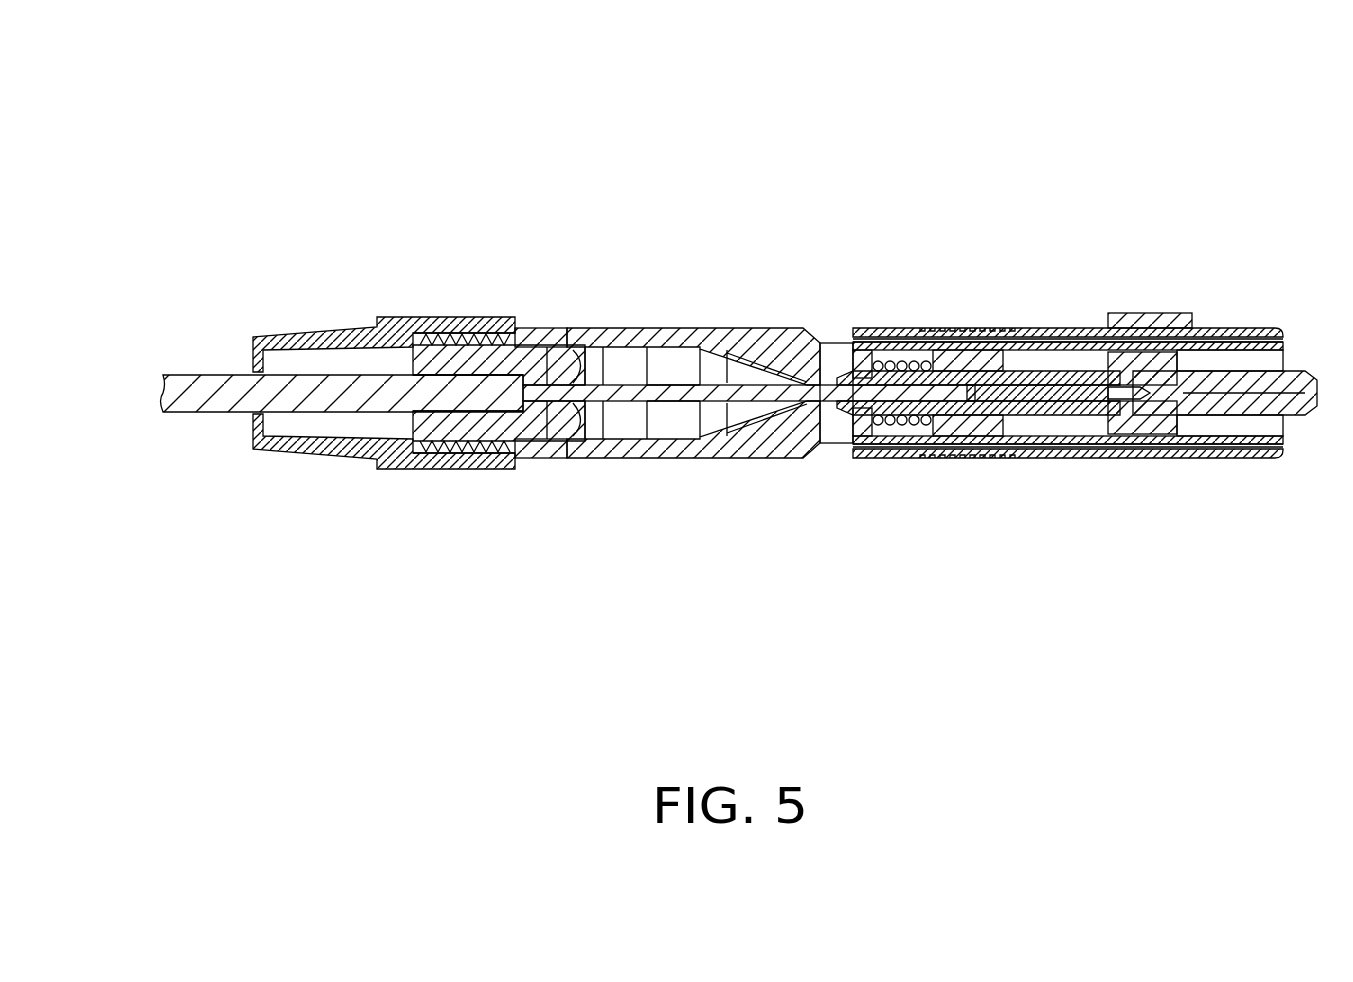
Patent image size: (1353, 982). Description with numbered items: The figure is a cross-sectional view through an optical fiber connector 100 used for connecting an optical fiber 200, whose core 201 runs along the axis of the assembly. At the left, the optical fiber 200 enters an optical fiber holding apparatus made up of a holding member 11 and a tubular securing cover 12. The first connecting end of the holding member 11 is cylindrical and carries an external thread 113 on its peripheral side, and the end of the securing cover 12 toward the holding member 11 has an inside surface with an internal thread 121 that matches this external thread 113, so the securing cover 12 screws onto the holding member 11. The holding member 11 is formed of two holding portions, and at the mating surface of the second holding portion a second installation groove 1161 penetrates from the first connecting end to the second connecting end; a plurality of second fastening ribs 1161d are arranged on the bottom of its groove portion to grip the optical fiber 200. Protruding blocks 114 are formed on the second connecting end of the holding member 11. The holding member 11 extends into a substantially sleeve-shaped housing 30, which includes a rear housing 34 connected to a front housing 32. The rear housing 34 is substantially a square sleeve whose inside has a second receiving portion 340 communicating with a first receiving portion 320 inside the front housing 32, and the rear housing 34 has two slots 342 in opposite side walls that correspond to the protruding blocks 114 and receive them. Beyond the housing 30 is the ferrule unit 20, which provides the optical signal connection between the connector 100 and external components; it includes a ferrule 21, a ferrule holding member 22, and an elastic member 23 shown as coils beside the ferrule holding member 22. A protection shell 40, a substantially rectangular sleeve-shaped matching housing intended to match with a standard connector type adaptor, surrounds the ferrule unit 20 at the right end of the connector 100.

The optical fiber connector 100 is at (630, 138).
The optical fiber 200 is at (200, 388).
The securing cover 12 is at (382, 472).
The internal thread 121 is at (418, 470).
The second installation groove 1161 is at (495, 380).
The second fastening ribs 1161d is at (420, 378).
The external thread 113 is at (470, 472).
The holding member 11 is at (549, 420).
The protruding blocks 114 is at (553, 347).
The housing 30 is at (885, 240).
The rear housing 34 is at (705, 330).
The slots 342 is at (560, 345).
The second receiving portion 340 is at (678, 420).
The front housing 32 is at (864, 330).
The ferrule unit 20 is at (1275, 234).
The ferrule 21 is at (1278, 378).
The ferrule holding member 22 is at (1125, 362).
The elastic member 23 is at (928, 360).
The core 201 is at (953, 410).
The first receiving portion 320 is at (1198, 427).
The protection shell 40 is at (1268, 458).